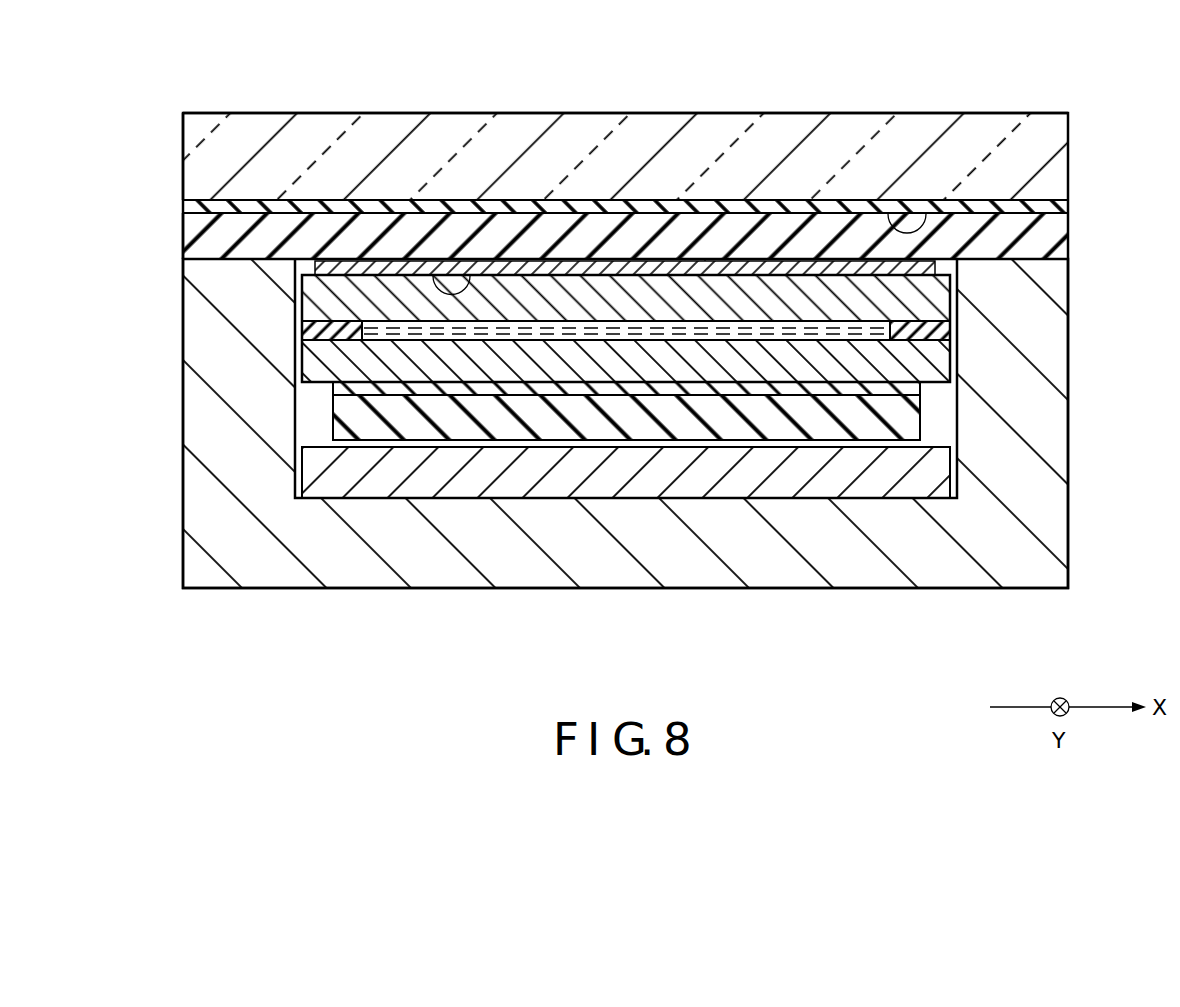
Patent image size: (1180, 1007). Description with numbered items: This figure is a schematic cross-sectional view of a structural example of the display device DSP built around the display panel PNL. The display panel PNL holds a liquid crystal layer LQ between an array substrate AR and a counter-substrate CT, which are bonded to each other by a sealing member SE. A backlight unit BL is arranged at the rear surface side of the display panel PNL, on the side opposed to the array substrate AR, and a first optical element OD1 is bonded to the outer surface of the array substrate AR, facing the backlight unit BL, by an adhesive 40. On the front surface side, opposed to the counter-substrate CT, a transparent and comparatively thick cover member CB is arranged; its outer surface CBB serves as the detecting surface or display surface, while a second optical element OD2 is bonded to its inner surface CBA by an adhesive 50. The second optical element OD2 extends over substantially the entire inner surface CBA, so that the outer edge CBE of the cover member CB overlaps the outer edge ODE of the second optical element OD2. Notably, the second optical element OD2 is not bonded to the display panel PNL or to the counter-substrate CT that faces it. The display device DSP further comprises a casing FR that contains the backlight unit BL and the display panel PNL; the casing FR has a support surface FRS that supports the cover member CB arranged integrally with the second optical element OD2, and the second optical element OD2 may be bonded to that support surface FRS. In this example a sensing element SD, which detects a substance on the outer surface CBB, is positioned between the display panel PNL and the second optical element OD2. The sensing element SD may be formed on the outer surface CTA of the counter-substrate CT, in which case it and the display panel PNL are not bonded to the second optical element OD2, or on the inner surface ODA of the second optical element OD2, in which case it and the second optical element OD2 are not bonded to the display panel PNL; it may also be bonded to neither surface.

The display device DSP is at (176, 602).
The cover member CB is at (1058, 170).
The adhesive 50 is at (1058, 212).
The second optical element OD2 is at (1058, 248).
The casing FR is at (1058, 433).
The outer edge of the cover member CBE is at (172, 152).
The outer edge of the second optical element ODE is at (172, 235).
The outer surface of the cover member CBB is at (843, 104).
The inner surface of the cover member CBA is at (893, 203).
The support surface FRS is at (263, 246).
The display panel PNL is at (716, 352).
The outer surface of the counter-substrate CTA is at (569, 260).
The inner surface of the second optical element ODA is at (437, 267).
The counter-substrate CT is at (410, 300).
The sealing member SE is at (337, 333).
The liquid crystal layer LQ is at (480, 333).
The array substrate AR is at (550, 365).
The adhesive 40 is at (692, 390).
The first optical element OD1 is at (765, 422).
The backlight unit BL is at (832, 472).
The sensing element SD is at (705, 257).